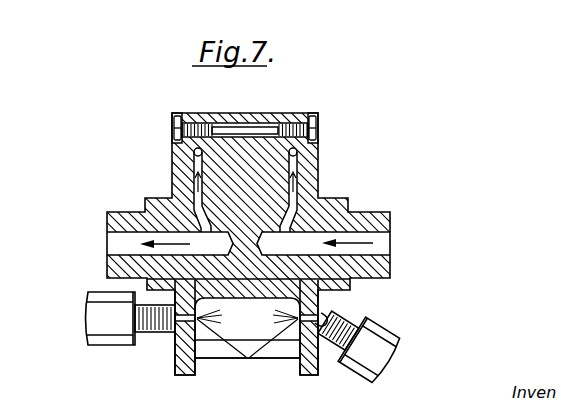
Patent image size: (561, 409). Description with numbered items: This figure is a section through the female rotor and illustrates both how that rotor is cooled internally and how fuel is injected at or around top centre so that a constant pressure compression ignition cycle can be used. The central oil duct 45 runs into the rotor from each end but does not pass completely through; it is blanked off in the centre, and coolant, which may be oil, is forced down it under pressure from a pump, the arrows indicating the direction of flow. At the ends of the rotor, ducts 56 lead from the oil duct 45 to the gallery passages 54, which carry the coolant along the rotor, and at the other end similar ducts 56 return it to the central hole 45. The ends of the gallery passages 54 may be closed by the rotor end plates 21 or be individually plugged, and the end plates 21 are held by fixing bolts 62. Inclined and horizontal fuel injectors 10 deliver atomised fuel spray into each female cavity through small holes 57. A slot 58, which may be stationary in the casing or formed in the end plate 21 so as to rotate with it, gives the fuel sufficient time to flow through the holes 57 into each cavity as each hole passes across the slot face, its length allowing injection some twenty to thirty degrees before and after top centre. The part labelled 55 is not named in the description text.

The fuel injector 10 is at (95, 327).
The rotor end plate 21 is at (183, 368).
The oil duct 45 is at (118, 243).
The gallery passage 54 is at (195, 150).
The rod 55 is at (263, 129).
The duct 56 is at (199, 190).
The small hole 57 is at (248, 358).
The slot 58 is at (326, 320).
The fixing bolt 62 is at (178, 119).